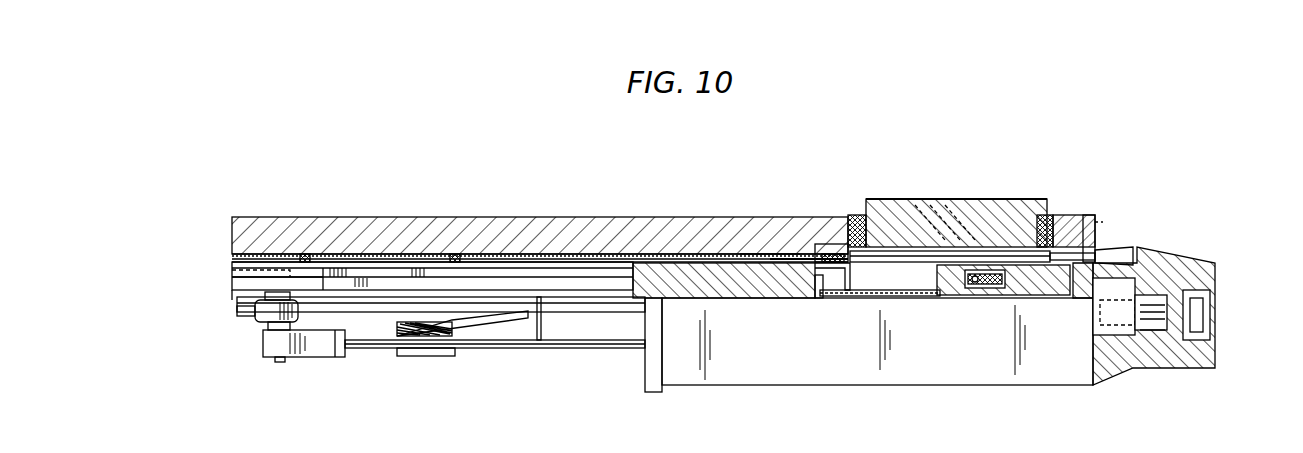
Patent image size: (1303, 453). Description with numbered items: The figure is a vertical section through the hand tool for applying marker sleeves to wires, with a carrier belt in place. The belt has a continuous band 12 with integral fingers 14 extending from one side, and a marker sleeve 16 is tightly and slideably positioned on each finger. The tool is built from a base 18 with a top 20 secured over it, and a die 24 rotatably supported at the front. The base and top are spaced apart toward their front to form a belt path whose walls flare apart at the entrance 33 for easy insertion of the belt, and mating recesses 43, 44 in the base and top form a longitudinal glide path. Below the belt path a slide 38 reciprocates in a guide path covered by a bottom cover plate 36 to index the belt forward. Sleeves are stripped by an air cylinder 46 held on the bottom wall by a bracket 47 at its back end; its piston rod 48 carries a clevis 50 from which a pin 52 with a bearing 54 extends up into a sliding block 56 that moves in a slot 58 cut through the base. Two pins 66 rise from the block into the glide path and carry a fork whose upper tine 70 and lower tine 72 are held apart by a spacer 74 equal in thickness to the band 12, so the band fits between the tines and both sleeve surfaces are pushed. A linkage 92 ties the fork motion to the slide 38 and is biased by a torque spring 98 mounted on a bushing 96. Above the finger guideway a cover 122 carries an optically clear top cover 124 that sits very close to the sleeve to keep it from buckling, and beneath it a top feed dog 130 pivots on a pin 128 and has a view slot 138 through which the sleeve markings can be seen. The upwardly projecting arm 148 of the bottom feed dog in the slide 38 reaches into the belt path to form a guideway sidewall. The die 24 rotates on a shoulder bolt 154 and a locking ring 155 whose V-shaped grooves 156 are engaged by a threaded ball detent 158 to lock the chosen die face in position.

The continuous band 12 is at (820, 250).
The integral fingers 14 is at (1075, 250).
The marker sleeve 16 is at (1000, 255).
The base 18 is at (232, 298).
The top 20 is at (424, 213).
The die 24 is at (1213, 370).
The entrance 33 is at (850, 290).
The bottom cover plate 36 is at (835, 300).
The slide 38 is at (948, 298).
The recess 43 is at (540, 262).
The recess 44 is at (500, 258).
The air cylinder 46 is at (812, 386).
The bracket 47 is at (648, 390).
The piston rod 48 is at (503, 350).
The clevis 50 is at (310, 357).
The pin 52 is at (278, 328).
The bearing 54 is at (262, 315).
The sliding block 56 is at (240, 279).
The slot 58 is at (345, 283).
The pins 66 is at (304, 257).
The upper tine 70 is at (792, 262).
The lower tine 72 is at (765, 280).
The spacer 74 is at (752, 262).
The linkage 92 is at (576, 297).
The bushing 96 is at (430, 356).
The torque spring 98 is at (410, 328).
The cover 122 is at (1080, 230).
The top cover 124 is at (1045, 232).
The pin 128 is at (1098, 220).
The top feed dog 130 is at (855, 242).
The view slot 138 is at (955, 240).
The upwardly projecting arm 148 is at (900, 235).
The shoulder bolt 154 is at (1195, 318).
The locking ring 155 is at (1152, 335).
The V-shaped grooves 156 is at (1158, 322).
The ball detent 158 is at (1148, 300).